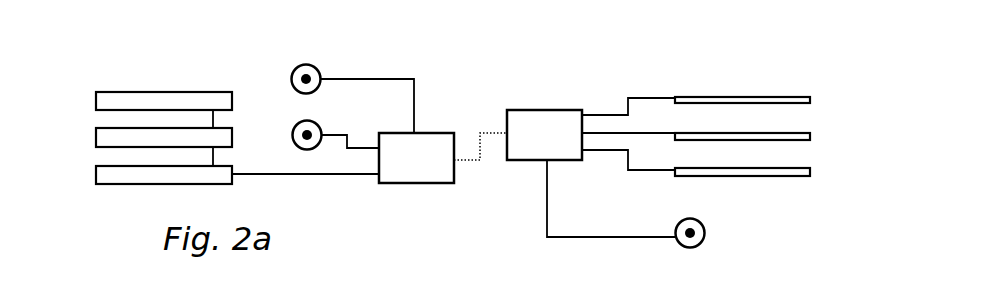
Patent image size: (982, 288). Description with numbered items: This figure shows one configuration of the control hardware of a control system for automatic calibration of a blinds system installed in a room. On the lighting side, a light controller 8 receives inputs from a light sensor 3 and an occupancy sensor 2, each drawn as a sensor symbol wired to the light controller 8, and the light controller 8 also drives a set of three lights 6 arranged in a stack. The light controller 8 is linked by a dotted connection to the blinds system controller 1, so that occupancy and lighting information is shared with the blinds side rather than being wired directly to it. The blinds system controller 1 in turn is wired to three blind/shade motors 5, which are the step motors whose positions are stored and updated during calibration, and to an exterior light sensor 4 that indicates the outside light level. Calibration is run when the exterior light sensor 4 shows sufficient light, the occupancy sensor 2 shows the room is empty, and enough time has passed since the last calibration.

The blinds system controller 1 is at (532, 162).
The occupancy sensor 2 is at (324, 123).
The lighting sensor 3 is at (320, 70).
The exterior light sensor 4 is at (675, 227).
The step motors 5 is at (811, 170).
The lights 6 is at (97, 171).
The light controller 8 is at (377, 175).